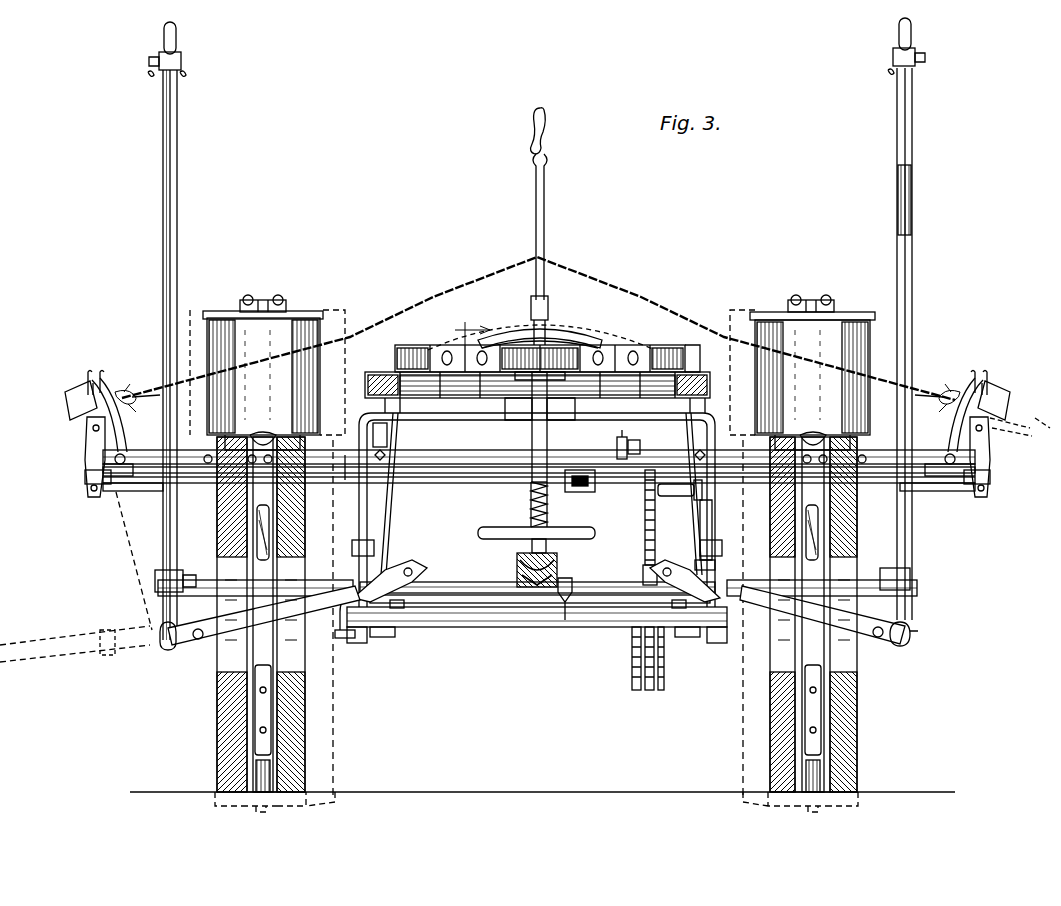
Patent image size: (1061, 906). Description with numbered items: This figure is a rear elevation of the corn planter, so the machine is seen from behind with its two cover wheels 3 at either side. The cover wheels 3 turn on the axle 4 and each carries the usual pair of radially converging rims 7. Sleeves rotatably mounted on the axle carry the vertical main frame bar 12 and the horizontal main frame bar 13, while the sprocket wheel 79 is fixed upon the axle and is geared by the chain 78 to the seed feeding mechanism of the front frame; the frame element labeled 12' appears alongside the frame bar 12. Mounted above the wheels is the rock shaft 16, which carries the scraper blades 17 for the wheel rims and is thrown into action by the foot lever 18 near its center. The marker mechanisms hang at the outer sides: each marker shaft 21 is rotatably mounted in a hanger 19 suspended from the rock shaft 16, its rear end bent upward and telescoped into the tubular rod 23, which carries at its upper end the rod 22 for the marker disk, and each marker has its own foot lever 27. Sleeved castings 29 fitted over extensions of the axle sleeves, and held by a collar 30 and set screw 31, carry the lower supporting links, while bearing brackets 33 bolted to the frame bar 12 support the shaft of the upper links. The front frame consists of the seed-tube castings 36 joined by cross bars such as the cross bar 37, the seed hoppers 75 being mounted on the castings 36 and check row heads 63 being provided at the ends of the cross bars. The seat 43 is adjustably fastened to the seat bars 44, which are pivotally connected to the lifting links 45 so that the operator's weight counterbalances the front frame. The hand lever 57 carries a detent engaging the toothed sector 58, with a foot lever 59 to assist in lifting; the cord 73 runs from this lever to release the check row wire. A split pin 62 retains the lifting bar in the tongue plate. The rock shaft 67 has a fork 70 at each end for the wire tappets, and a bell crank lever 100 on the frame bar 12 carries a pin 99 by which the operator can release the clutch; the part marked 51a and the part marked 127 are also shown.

The cover wheels 3 is at (536, 614).
The axle 4 is at (350, 640).
The rims 7 is at (232, 735).
The vertical main frame bar 12 is at (280, 422).
The U-shaped frame 12' is at (537, 503).
The horizontal main frame bar 13 is at (500, 628).
The rock shaft 16 is at (455, 612).
The scraper blades 17 is at (225, 630).
The foot lever 18 is at (565, 628).
The hanger 19 is at (920, 636).
The marker shaft 21 is at (150, 626).
The rod 22 is at (160, 45).
The tubular rod 23 is at (180, 183).
The foot lever 27 is at (355, 645).
The sleeved castings 29 is at (385, 640).
The collar 30 is at (440, 600).
The set screw 31 is at (415, 572).
The bearing brackets 33 is at (395, 345).
The seed-tube castings 36 is at (204, 457).
The cross bar 37 is at (665, 345).
The seat 43 is at (578, 342).
The seat bars 44 is at (545, 345).
The lifting links 45 is at (385, 535).
The block 51a is at (562, 560).
The hand lever 57 is at (547, 225).
The toothed sector 58 is at (455, 457).
The foot lever 59 is at (572, 470).
The split pin 62 is at (623, 436).
The check row heads 63 is at (85, 440).
The rock shaft 67 is at (475, 480).
The fork 70 is at (98, 372).
The cord 73 is at (632, 300).
The seed hoppers 75 is at (539, 372).
The chain 78 is at (645, 505).
The drive sprocket 79 is at (552, 560).
The pin 99 is at (668, 483).
The bell crank lever 100 is at (705, 530).
The bracket 127 is at (265, 495).